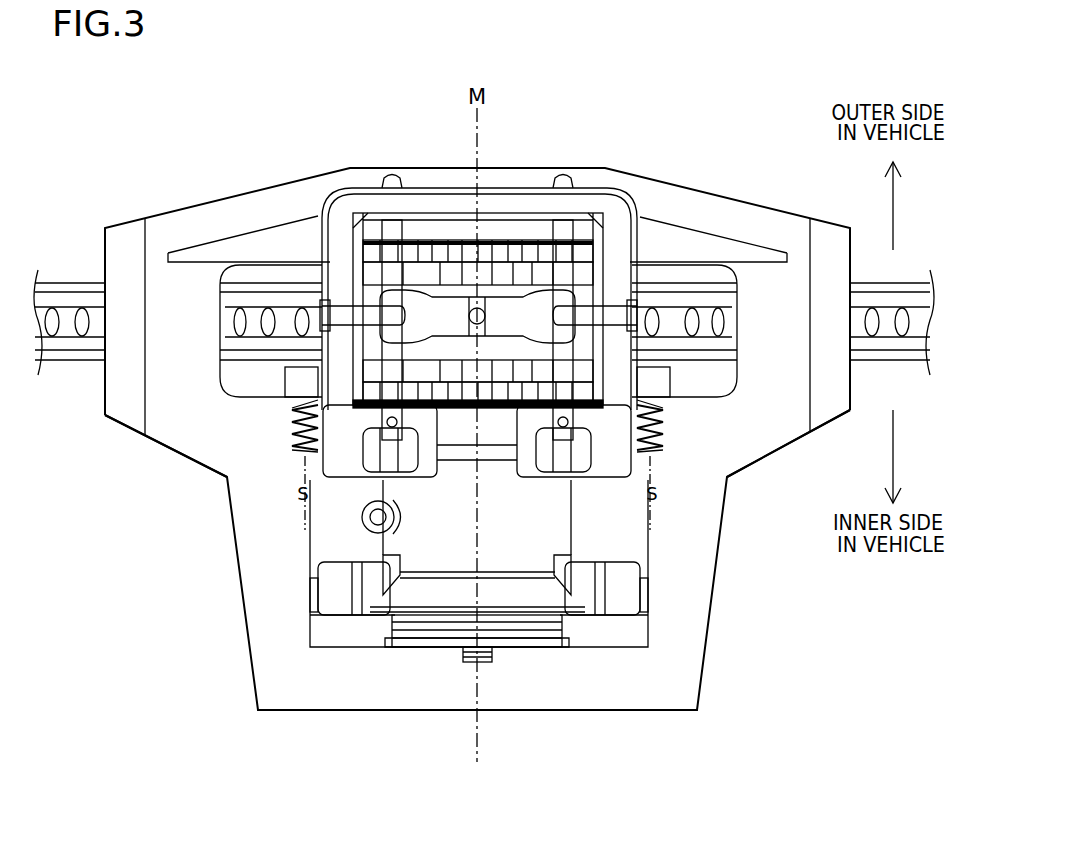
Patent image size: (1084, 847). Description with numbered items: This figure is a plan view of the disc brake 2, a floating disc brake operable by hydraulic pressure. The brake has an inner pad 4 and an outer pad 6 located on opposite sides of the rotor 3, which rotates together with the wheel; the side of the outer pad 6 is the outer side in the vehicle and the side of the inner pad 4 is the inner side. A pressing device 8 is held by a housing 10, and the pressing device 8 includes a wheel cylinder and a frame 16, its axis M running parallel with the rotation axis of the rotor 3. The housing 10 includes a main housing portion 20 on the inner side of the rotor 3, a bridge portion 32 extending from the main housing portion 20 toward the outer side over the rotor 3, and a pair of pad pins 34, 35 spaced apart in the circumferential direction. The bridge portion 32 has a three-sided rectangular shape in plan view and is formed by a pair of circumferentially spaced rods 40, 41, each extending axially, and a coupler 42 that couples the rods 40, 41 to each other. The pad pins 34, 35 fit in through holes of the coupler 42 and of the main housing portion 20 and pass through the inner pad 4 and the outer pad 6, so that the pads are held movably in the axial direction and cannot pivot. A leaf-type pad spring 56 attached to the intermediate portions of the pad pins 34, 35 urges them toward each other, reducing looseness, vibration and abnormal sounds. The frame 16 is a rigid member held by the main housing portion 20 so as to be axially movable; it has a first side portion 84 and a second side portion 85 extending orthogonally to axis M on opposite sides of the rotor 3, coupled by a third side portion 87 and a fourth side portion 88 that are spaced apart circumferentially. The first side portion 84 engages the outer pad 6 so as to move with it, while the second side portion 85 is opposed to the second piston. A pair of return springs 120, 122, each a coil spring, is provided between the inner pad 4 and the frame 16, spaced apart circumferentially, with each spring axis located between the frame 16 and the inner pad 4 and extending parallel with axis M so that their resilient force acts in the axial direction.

The disc brake 2 is at (235, 164).
The rotor 3 is at (62, 314).
The inner pad 4 is at (735, 314).
The outer pad 6 is at (347, 262).
The pressing device 8 is at (258, 722).
The housing 10 is at (660, 553).
The frame 16 is at (784, 196).
The main housing portion 20 is at (540, 598).
The bridge portion 32 is at (353, 184).
The pad pin 34 is at (390, 357).
The pad pin 35 is at (560, 279).
The rod 40 is at (330, 240).
The rod 41 is at (626, 243).
The coupler 42 is at (492, 207).
The pad spring 56 is at (517, 308).
The first side portion 84 is at (421, 178).
The second side portion 85 is at (360, 672).
The third side portion 87 is at (167, 440).
The fourth side portion 88 is at (737, 438).
The return spring 120 is at (293, 445).
The return spring 122 is at (662, 445).